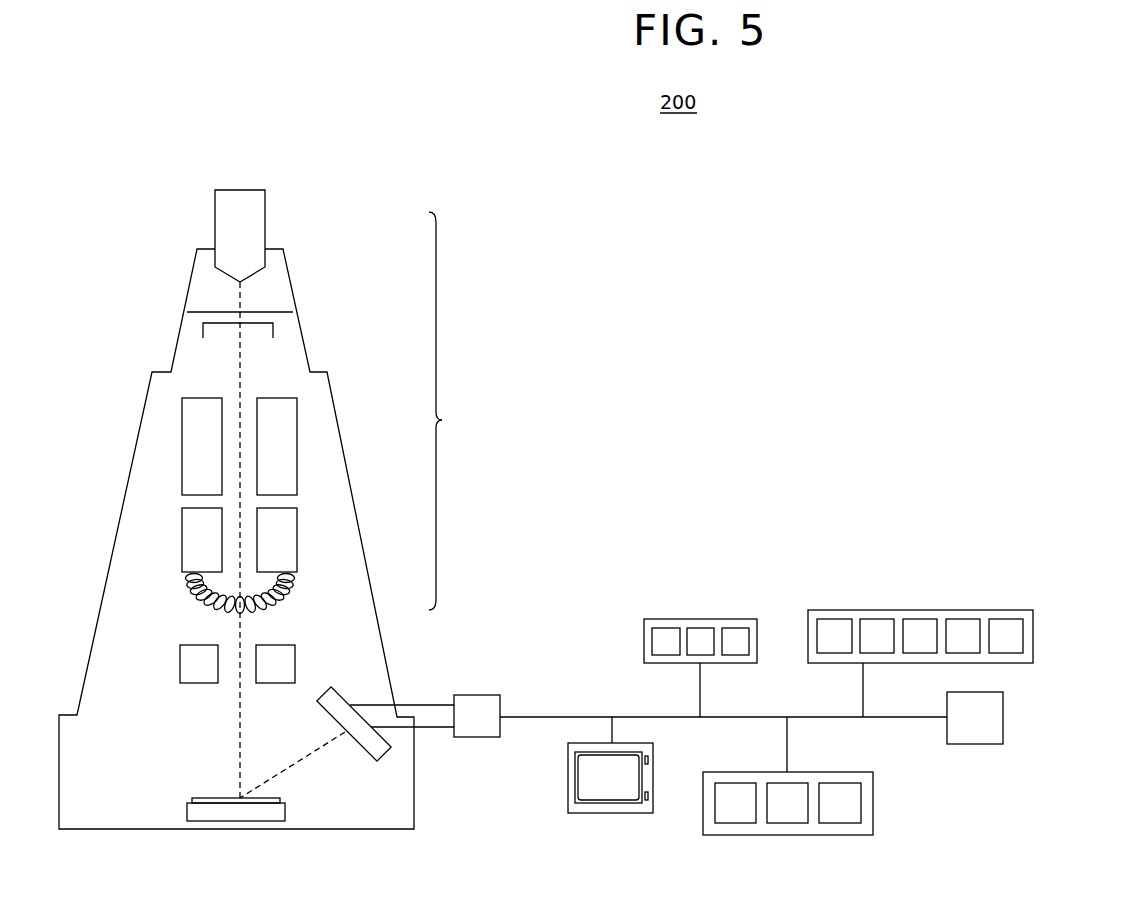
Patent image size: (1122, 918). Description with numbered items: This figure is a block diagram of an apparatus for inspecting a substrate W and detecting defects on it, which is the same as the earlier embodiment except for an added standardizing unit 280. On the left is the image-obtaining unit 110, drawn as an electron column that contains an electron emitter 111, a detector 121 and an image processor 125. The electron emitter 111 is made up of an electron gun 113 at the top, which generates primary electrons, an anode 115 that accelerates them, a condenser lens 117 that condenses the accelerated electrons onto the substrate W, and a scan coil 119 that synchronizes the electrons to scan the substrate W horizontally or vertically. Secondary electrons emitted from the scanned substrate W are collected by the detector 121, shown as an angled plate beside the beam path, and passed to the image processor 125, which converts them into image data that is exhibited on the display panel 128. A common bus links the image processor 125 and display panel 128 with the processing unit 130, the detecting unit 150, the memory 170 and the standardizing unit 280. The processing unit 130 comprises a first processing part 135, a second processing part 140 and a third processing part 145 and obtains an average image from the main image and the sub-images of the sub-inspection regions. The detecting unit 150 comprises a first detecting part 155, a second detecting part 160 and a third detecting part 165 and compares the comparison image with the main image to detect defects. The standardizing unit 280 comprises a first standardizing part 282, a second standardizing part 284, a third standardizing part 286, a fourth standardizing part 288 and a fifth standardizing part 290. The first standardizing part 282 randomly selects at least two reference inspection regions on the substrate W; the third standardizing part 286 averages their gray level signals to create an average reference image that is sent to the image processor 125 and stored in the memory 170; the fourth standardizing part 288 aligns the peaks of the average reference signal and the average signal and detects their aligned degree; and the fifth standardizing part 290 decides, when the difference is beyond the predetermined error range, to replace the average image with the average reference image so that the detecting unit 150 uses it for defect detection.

The image-obtaining unit 110 is at (347, 185).
The electron emitter 111 is at (333, 402).
The electron gun 113 is at (250, 225).
The anode 115 is at (273, 325).
The condenser lens 117 is at (297, 433).
The scan coil 119 is at (285, 583).
The detector 121 is at (353, 750).
The substrate W is at (207, 808).
The image processor 125 is at (480, 737).
The display panel 128 is at (608, 813).
The processing unit 130 is at (644, 640).
The first processing part 135 is at (668, 628).
The second processing part 140 is at (700, 628).
The third processing part 145 is at (733, 628).
The detecting unit 150 is at (873, 803).
The first detecting part 155 is at (735, 823).
The second detecting part 160 is at (787, 823).
The third detecting part 165 is at (839, 823).
The memory 170 is at (1003, 717).
The standardizing unit 280 is at (1033, 637).
The first standardizing part 282 is at (833, 619).
The second standardizing part 284 is at (877, 619).
The third standardizing part 286 is at (918, 619).
The fourth standardizing part 288 is at (963, 619).
The fifth standardizing part 290 is at (1008, 619).